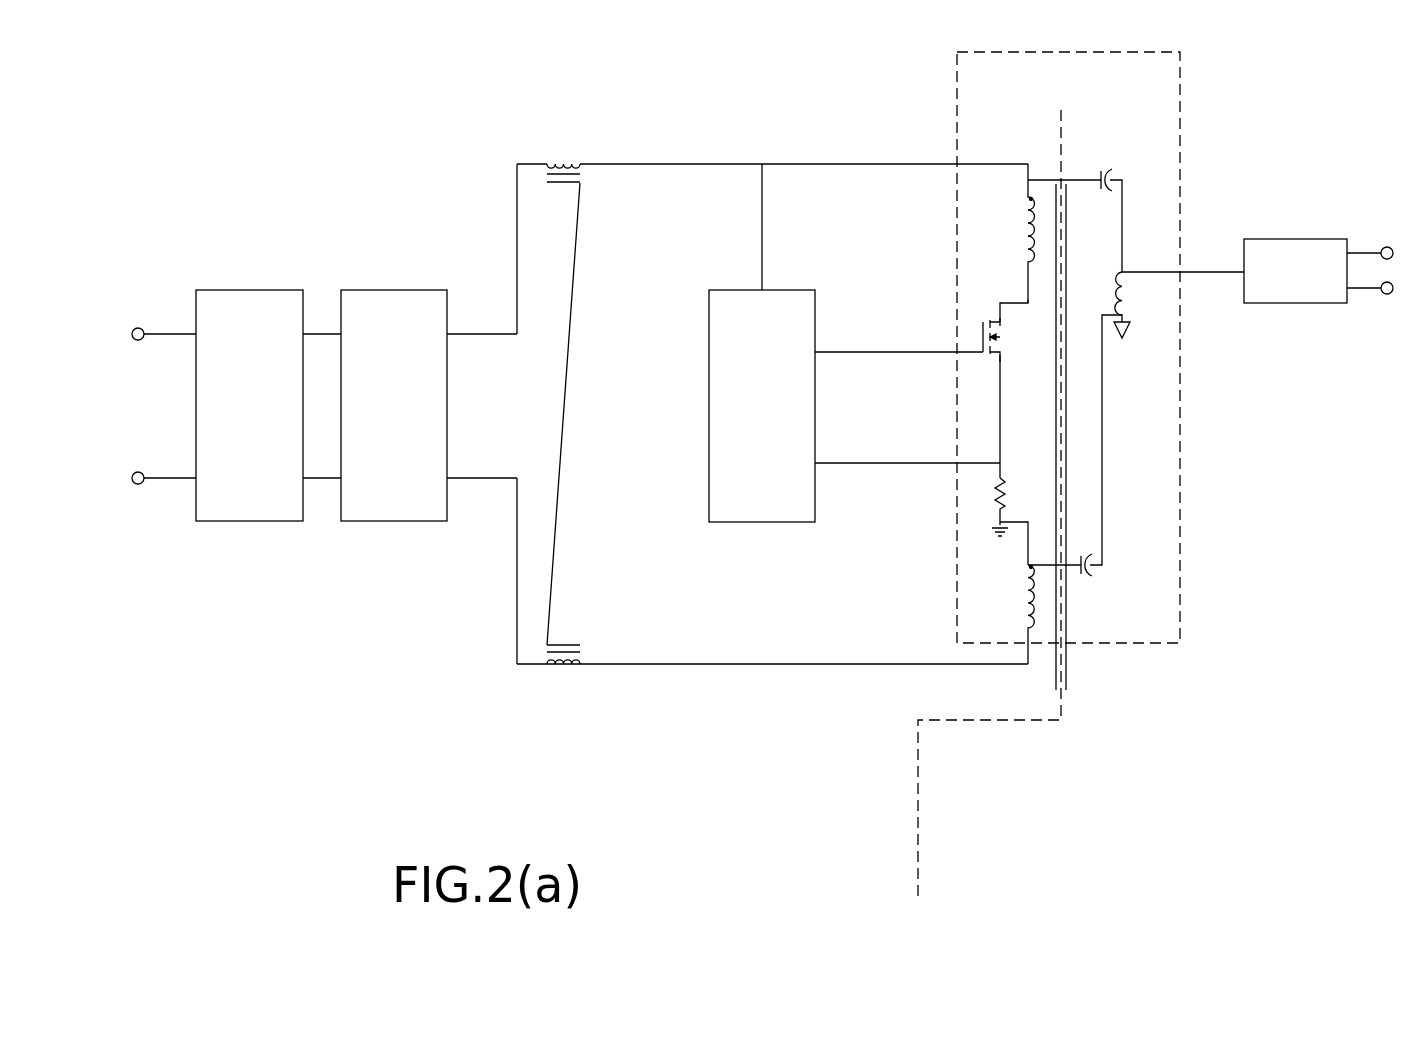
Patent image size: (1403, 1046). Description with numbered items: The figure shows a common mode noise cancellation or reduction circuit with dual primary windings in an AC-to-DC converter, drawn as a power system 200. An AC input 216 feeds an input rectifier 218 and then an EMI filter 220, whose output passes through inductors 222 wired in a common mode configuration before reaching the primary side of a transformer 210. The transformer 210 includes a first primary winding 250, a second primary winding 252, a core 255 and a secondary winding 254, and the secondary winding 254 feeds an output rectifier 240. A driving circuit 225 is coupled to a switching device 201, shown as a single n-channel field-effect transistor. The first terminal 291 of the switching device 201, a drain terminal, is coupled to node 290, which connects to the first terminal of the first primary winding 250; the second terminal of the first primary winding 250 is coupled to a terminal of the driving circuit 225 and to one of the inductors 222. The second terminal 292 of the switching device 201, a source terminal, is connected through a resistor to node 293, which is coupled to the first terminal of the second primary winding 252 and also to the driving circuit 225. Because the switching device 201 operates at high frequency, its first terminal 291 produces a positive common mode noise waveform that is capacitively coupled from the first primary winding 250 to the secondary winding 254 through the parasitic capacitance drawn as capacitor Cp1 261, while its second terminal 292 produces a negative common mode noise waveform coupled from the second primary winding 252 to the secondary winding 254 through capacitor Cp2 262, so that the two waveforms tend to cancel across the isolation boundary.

The power system 200 is at (675, 131).
The transformer 210 is at (945, 116).
The AC input 216 is at (155, 406).
The input rectifier 218 is at (269, 428).
The EMI filter 220 is at (414, 428).
The inductors wired in a common mode configuration 222 is at (590, 437).
The driving circuit 225 is at (782, 428).
The output rectifier 240 is at (1315, 289).
The first primary winding 250 is at (1028, 214).
The second primary winding 252 is at (1028, 601).
The secondary winding 254 is at (1122, 292).
The core 255 is at (1066, 185).
The capacitor Cp1 261 is at (1130, 182).
The capacitor Cp2 262 is at (1108, 571).
The node 290 is at (1027, 300).
The first terminal of the switching device 291 is at (1001, 321).
The second terminal of the switching device 292 is at (1001, 358).
The node 293 is at (1027, 526).
The switching device 201 is at (983, 338).